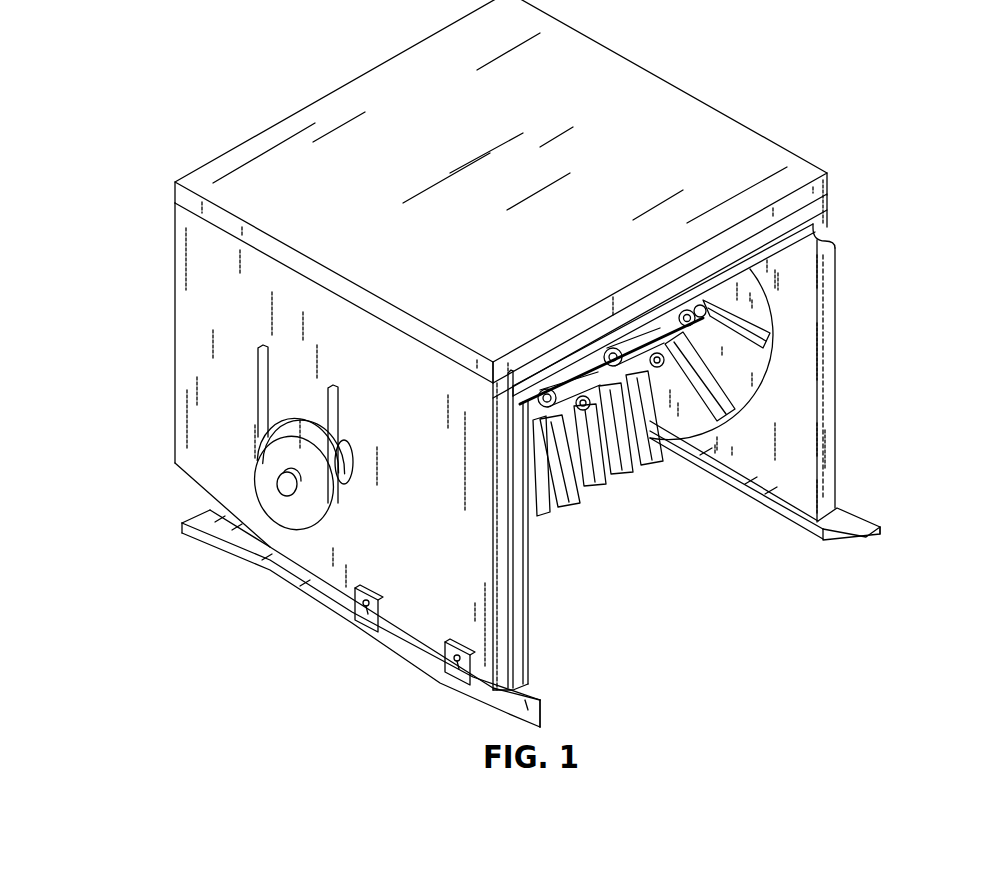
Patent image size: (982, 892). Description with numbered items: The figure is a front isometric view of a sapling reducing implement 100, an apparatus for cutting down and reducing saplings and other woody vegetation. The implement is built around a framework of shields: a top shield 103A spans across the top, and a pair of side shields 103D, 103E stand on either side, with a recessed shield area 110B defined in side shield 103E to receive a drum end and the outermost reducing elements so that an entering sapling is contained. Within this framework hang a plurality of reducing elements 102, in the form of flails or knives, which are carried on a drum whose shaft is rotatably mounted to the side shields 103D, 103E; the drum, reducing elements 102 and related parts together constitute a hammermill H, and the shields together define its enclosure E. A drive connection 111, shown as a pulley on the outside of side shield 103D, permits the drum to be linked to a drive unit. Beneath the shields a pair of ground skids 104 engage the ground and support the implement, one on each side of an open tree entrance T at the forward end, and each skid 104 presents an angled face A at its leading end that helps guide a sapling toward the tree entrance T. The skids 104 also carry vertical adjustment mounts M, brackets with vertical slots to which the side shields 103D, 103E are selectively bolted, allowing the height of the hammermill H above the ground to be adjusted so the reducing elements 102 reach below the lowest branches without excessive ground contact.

The sapling reducing implement 100 is at (857, 70).
The top shield 103A is at (655, 92).
The side shield 103D is at (188, 322).
The side shield 103E is at (818, 213).
The ground skid 104 is at (197, 518).
The drive connection 111 is at (278, 492).
The reducing elements 102 is at (612, 475).
The recessed shield area 110B is at (760, 383).
The vertical adjustment mounts M is at (363, 617).
The angled face A is at (543, 714).
The enclosure E is at (793, 319).
The hammermill H is at (562, 538).
The tree entrance T is at (717, 624).